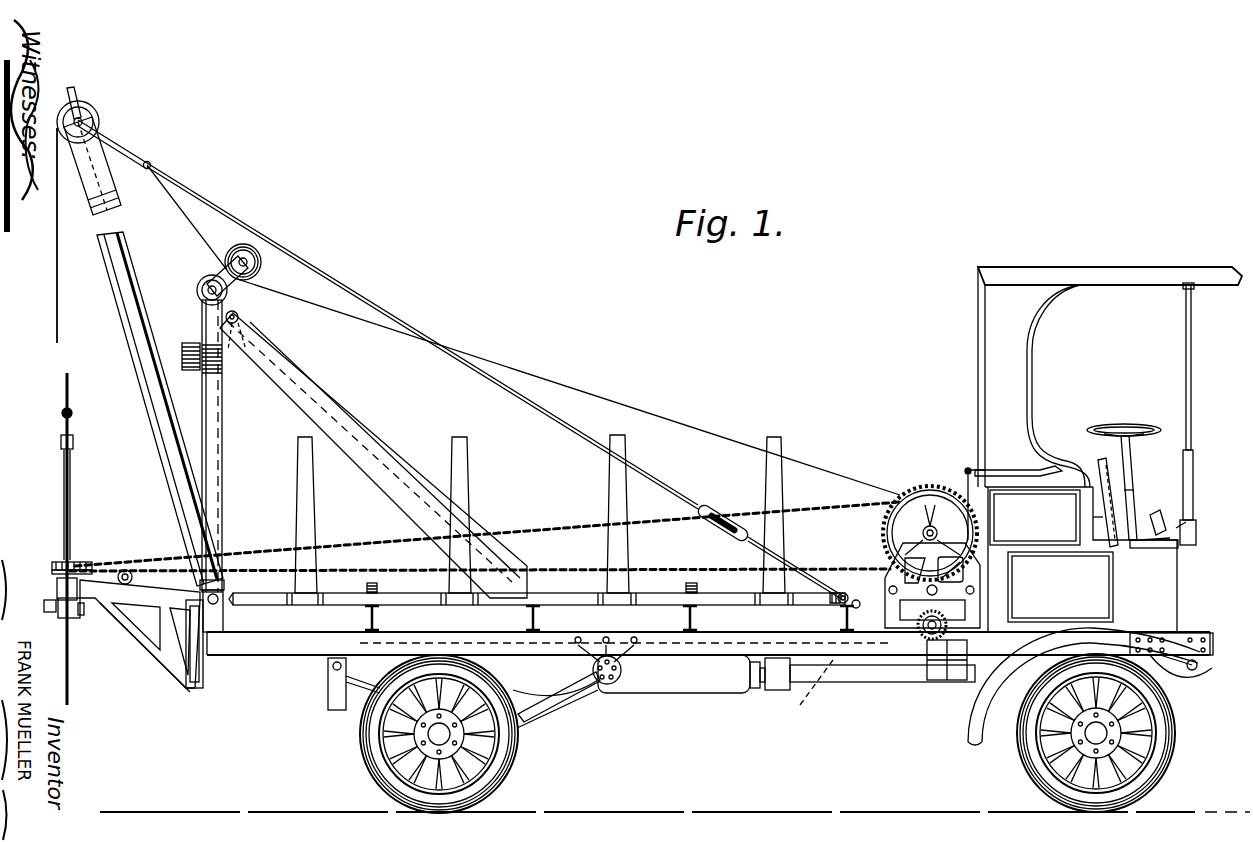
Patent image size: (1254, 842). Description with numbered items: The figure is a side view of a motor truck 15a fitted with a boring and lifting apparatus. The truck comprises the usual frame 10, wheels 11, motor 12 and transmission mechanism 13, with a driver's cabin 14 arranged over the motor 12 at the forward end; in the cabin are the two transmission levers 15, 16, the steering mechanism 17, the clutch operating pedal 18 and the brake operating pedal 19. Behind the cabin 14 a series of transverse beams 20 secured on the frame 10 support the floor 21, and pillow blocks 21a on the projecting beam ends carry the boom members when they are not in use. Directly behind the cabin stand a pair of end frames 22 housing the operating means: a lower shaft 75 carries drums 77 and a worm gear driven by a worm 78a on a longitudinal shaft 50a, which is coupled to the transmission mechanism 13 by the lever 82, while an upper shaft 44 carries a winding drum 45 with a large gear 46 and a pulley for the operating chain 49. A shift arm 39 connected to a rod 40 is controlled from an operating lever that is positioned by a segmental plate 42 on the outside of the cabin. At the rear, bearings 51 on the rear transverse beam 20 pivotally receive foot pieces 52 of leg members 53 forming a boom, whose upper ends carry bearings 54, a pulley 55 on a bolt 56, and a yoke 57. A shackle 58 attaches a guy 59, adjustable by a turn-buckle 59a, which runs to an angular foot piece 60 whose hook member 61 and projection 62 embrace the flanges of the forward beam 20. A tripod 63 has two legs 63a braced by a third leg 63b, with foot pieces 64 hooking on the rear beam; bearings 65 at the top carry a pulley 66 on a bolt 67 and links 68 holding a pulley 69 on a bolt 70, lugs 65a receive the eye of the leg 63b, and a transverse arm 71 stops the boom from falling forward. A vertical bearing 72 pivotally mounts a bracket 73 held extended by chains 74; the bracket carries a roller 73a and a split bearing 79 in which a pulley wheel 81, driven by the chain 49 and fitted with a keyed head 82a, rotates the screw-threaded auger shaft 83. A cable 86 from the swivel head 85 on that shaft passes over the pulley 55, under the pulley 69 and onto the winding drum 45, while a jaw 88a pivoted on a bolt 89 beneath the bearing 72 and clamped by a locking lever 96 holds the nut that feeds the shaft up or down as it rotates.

The frame 10 is at (309, 645).
The wheels 11 is at (381, 764).
The motor 12 is at (973, 692).
The transmission mechanism 13 is at (699, 682).
The driver's cabin 14 is at (988, 357).
The transmission lever 15 is at (1107, 474).
The motor truck 15a is at (540, 469).
The transmission lever 16 is at (1135, 484).
The steering mechanism 17 is at (1120, 425).
The clutch operating pedal 18 is at (1163, 511).
The brake operating pedal 19 is at (1172, 522).
The transverse beams 20 is at (212, 645).
The floor 21 is at (421, 604).
The pillow blocks 21a is at (375, 588).
The end frames 22 is at (888, 558).
The arm 39 is at (968, 466).
The rod 40 is at (966, 483).
The segmental plate 42 is at (983, 470).
The shaft 44 is at (932, 527).
The winding drum 45 is at (916, 488).
The large gear 46 is at (893, 531).
The operating chain 49 is at (145, 566).
The longitudinal shaft 50a is at (806, 682).
The bearings 51 is at (224, 612).
The foot pieces 52 is at (211, 591).
The leg members 53 is at (147, 417).
The bearings 54 is at (100, 180).
The pulley 55 is at (95, 112).
The bolt 56 is at (103, 122).
The yoke 57 is at (77, 88).
The shackle 58 is at (138, 150).
The guy 59 is at (203, 196).
The turn-buckle 59a is at (714, 514).
The angular foot piece 60 is at (852, 593).
The hook member 61 is at (871, 608).
The projection 62 is at (836, 604).
The tripod 63 is at (235, 446).
The tripod legs 63a is at (216, 455).
The tripod brace leg 63b is at (383, 454).
The foot pieces 64 is at (226, 584).
The bearings 65 is at (203, 327).
The projecting lugs 65a is at (243, 353).
The pulley 66 is at (234, 300).
The bolt 67 is at (207, 290).
The links 68 is at (221, 266).
The pulley 69 is at (262, 266).
The bolt 70 is at (245, 257).
The transverse arm 71 is at (196, 366).
The vertical bearing 72 is at (197, 686).
The bracket 73 is at (163, 660).
The roller 73a is at (133, 583).
The chains 74 is at (138, 632).
The shaft 75 is at (910, 648).
The drums 77 is at (932, 640).
The worm 78a is at (943, 662).
The vertical split bearing 79 is at (58, 585).
The pulley wheel 81 is at (53, 562).
The lever 82 is at (1103, 518).
The head 82a is at (78, 561).
The screw-threaded shaft 83 is at (63, 497).
The swivel head 85 is at (61, 442).
The cable 86 is at (177, 208).
The jaw 88a is at (62, 610).
The bolt 89 is at (82, 618).
The locking lever 96 is at (46, 608).